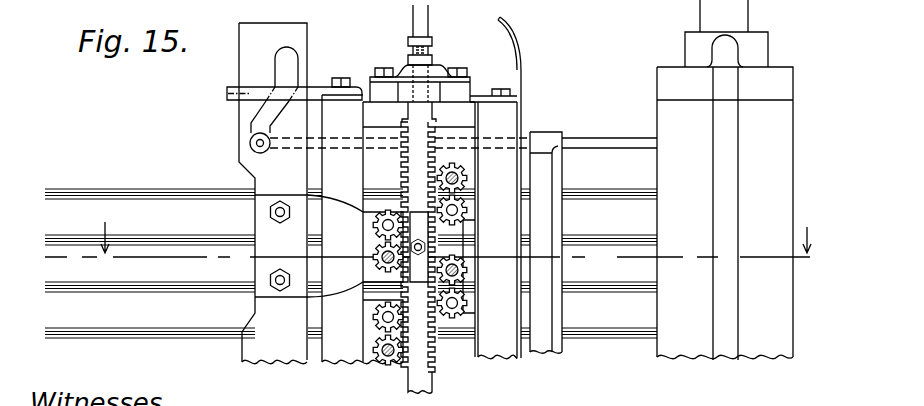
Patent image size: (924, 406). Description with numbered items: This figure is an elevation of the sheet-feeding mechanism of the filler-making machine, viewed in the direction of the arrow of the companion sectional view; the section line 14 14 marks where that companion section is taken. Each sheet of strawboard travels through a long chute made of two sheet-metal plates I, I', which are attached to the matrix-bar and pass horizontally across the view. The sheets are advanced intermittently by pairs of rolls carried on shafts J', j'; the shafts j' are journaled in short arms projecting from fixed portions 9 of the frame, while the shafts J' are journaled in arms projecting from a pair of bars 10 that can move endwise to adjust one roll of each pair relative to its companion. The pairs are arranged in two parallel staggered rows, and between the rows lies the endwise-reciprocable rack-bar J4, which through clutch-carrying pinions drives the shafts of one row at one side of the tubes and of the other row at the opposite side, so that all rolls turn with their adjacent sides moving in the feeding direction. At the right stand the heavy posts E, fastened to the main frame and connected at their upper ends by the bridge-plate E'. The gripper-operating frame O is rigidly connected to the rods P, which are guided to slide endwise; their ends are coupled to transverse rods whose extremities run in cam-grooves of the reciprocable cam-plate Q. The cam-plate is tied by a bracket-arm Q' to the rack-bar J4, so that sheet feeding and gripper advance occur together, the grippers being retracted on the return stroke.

The cam-plate Q is at (294, 193).
The bracket-arm Q' is at (309, 246).
The rod P is at (595, 142).
The gripper-operating frame O is at (558, 180).
The sheet-metal plate of feed-tube I is at (351, 204).
The sheet-metal plate of feed-tube I' is at (351, 251).
The fixed portion of the frame 9 is at (419, 226).
The bar 10 is at (431, 113).
The rack-bar J4 is at (419, 188).
The shaft J' is at (417, 224).
The shaft j' is at (418, 265).
The post E is at (725, 213).
The bridge-plate E' is at (720, 47).
The section line 14 is at (428, 244).